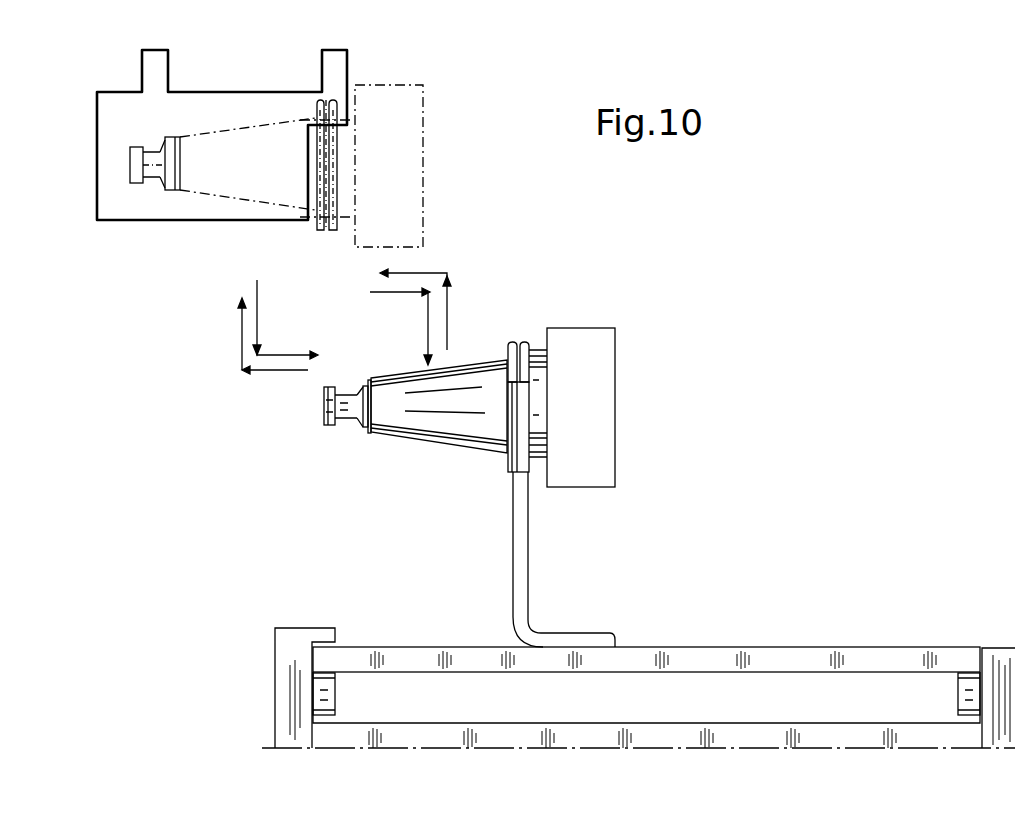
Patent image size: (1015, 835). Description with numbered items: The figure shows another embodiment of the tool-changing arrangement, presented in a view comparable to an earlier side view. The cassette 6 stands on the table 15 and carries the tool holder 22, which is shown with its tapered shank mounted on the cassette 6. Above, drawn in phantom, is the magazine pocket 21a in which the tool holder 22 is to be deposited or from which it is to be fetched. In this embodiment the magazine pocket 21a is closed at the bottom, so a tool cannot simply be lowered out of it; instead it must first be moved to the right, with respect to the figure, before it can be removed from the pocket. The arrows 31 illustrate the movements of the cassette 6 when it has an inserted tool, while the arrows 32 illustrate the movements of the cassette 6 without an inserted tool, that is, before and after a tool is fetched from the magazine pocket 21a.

The magazine pocket 21a is at (333, 60).
The arrows 31 is at (437, 307).
The arrows 32 is at (247, 315).
The tool holder 22 is at (422, 423).
The cassette 6 is at (520, 567).
The table 15 is at (993, 657).